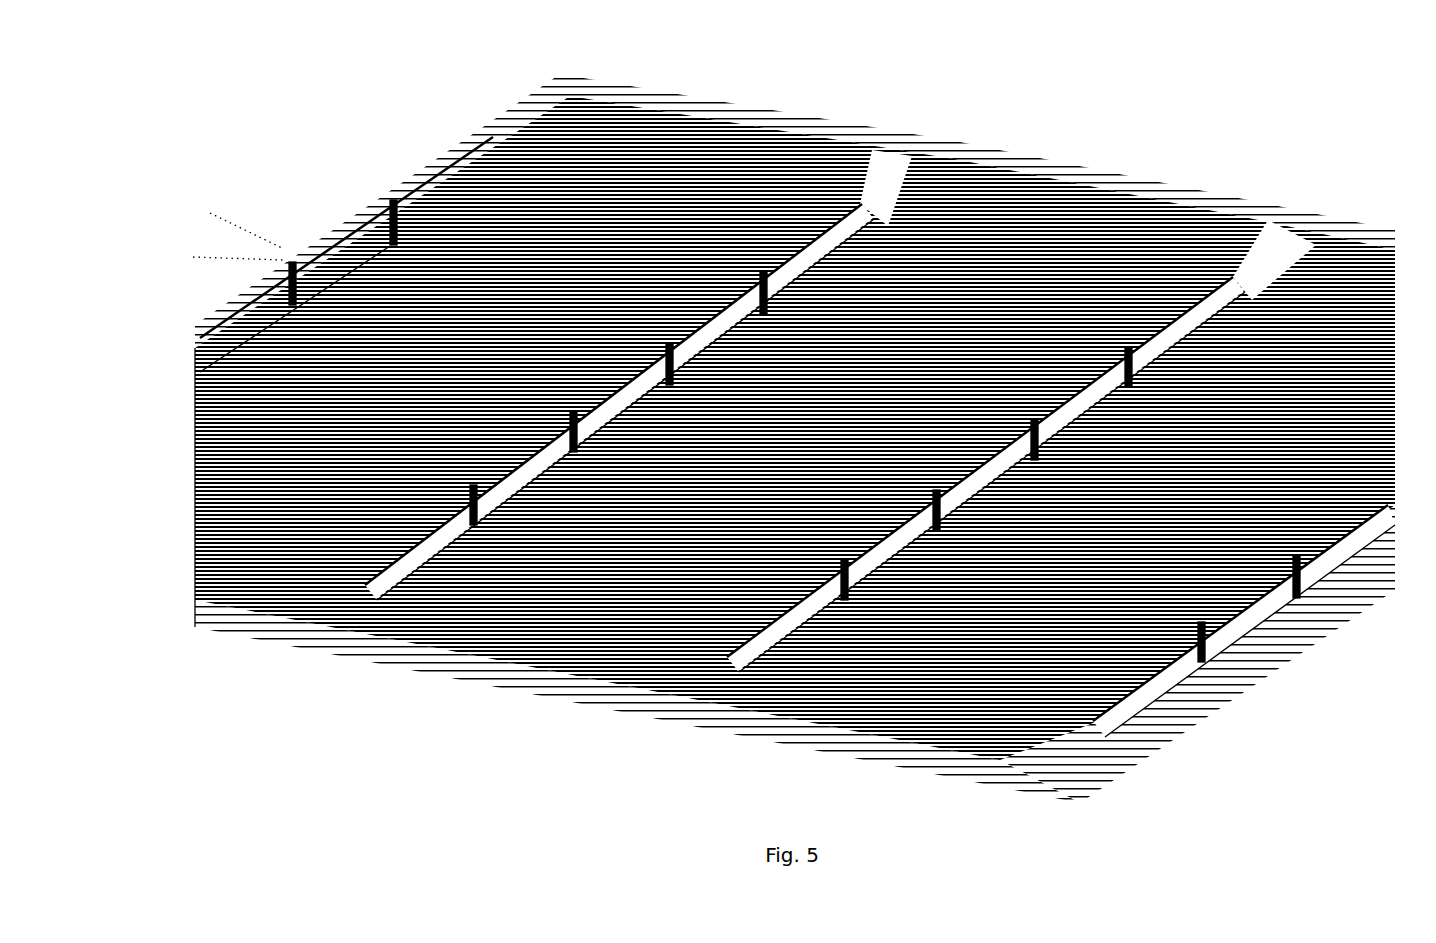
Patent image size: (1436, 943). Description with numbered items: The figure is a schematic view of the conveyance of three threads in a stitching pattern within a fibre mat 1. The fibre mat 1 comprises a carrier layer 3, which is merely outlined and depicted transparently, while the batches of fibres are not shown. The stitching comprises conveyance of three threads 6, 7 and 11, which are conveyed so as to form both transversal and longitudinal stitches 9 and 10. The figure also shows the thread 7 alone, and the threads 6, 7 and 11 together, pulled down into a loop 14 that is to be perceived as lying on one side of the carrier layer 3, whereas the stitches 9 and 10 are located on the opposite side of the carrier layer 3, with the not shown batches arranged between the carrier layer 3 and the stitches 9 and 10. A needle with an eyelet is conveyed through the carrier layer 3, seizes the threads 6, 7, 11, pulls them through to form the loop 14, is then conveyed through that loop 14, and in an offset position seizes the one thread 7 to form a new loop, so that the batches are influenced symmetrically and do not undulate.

The fibre mat 1 is at (755, 428).
The carrier layer 3 is at (523, 117).
The thread 6 is at (603, 262).
The thread 7 is at (815, 240).
The transversal stitch 9 is at (721, 467).
The longitudinal stitch 10 is at (295, 408).
The thread 11 is at (893, 317).
The loop 14 is at (485, 616).